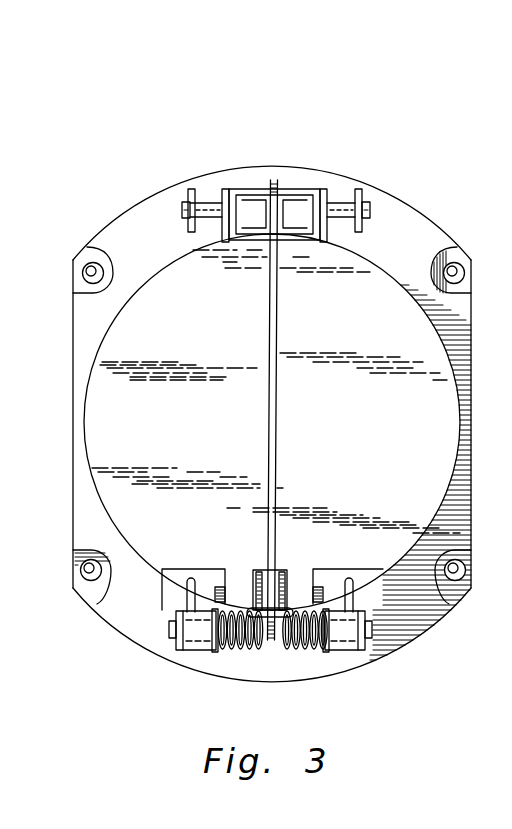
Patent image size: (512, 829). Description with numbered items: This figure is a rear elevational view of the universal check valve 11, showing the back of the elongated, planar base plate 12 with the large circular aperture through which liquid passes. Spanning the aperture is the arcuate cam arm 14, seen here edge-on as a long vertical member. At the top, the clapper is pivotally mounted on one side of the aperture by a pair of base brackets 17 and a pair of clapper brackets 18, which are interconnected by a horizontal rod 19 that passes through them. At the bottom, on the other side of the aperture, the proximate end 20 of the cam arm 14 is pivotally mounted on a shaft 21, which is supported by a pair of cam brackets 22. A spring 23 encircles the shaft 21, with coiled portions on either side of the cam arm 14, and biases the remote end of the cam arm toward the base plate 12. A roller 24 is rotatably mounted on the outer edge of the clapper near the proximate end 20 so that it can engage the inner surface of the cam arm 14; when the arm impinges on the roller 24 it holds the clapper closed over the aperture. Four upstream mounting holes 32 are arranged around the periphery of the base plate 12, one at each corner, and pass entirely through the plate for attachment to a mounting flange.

The universal check valve 11 is at (318, 118).
The base plate 12 is at (133, 212).
The cam arm 14 is at (276, 394).
The base brackets 17 is at (187, 188).
The clapper brackets 18 is at (327, 193).
The rod 19 is at (205, 208).
The proximate end 20 is at (254, 570).
The shaft 21 is at (170, 630).
The cam brackets 22 is at (363, 652).
The spring 23 is at (236, 651).
The roller 24 is at (284, 592).
The upstream mounting holes 32 is at (84, 283).